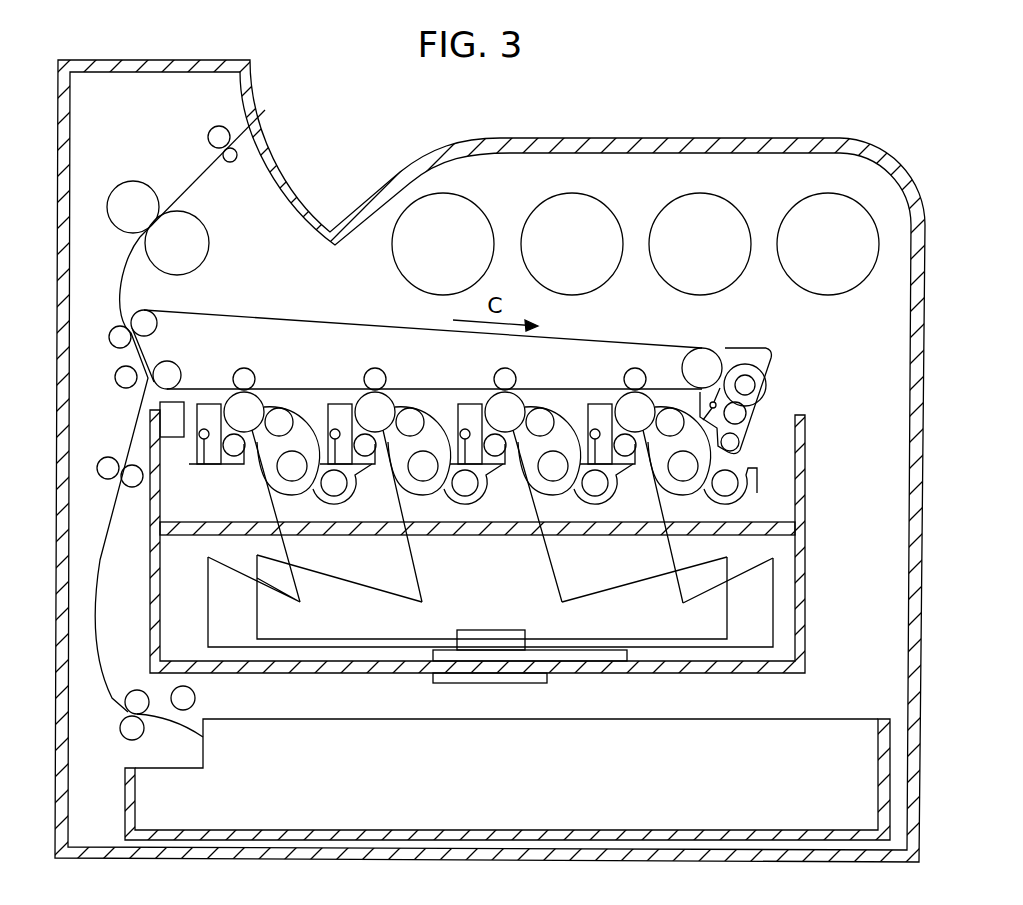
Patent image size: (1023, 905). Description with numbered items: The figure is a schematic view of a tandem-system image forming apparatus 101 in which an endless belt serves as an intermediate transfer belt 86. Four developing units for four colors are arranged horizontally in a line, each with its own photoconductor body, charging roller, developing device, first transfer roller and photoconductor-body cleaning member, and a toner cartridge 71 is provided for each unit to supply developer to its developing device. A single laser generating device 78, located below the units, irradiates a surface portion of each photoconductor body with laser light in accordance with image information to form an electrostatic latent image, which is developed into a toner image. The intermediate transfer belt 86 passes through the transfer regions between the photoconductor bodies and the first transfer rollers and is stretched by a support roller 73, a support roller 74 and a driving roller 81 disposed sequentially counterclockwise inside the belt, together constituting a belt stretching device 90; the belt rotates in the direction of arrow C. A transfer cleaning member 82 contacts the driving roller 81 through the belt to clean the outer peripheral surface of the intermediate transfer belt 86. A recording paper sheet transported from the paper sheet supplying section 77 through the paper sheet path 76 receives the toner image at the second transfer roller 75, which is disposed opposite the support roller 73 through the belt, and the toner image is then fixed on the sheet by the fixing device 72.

The image forming apparatus 101 is at (622, 98).
The toner cartridge 71 is at (526, 221).
The fixing device 72 is at (134, 183).
The support roller 73 is at (152, 317).
The support roller 74 is at (134, 395).
The second transfer roller 75 is at (116, 328).
The paper sheet path 76 is at (98, 632).
The paper sheet supplying section 77 is at (867, 760).
The laser generating device 78 is at (496, 630).
The driving roller 81 is at (710, 352).
The transfer cleaning member 82 is at (774, 370).
The intermediate transfer belt 86 is at (363, 322).
The belt stretching device 90 is at (292, 312).